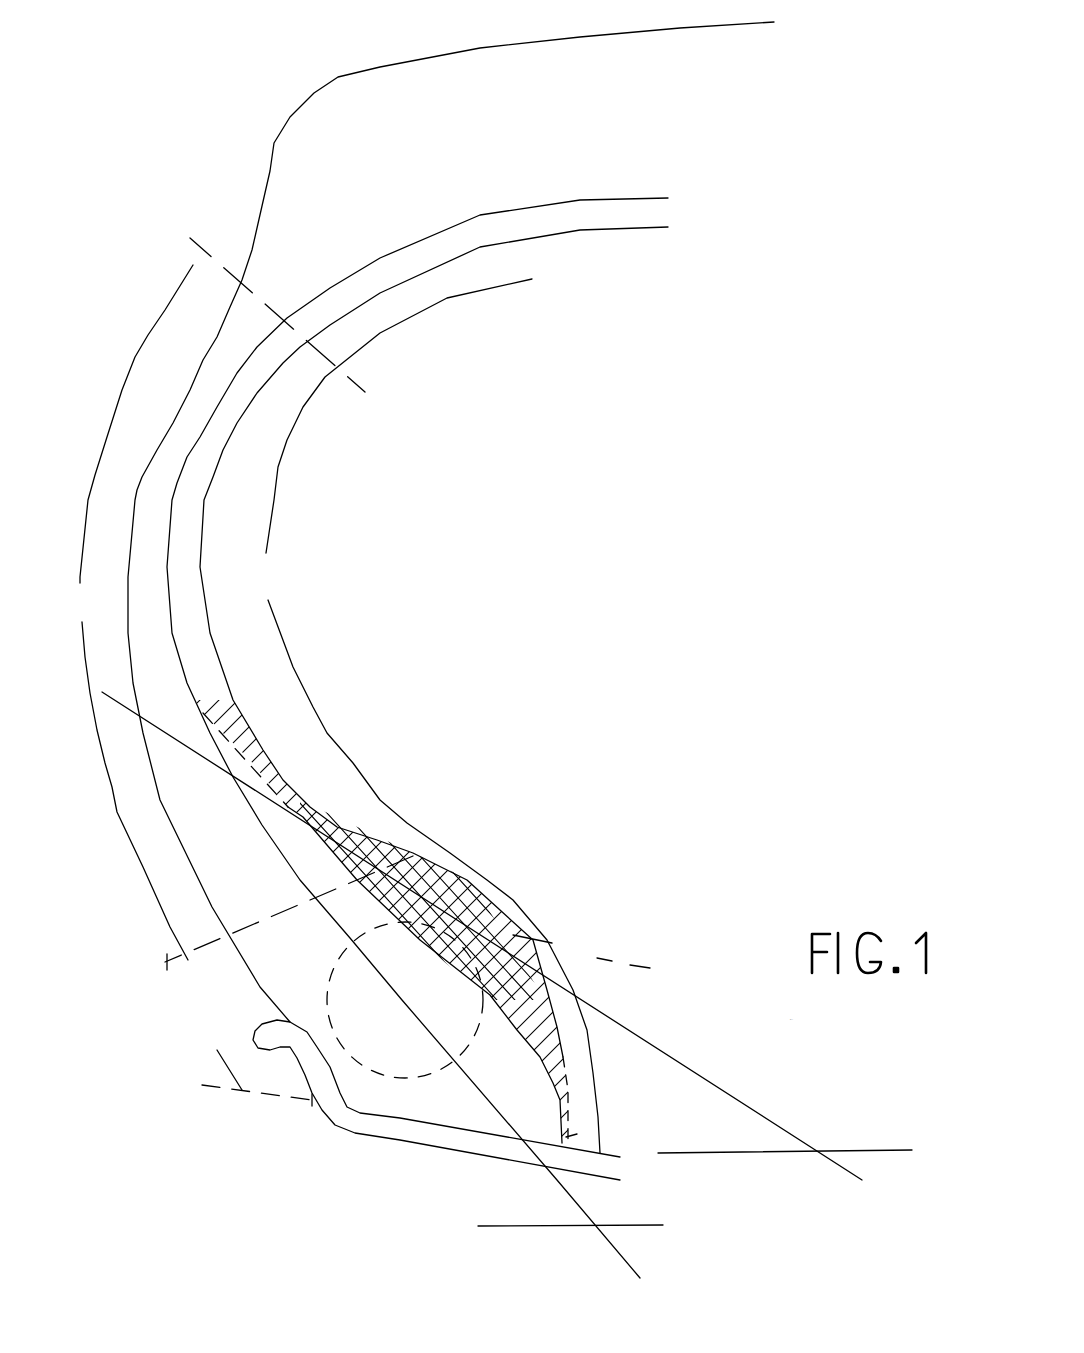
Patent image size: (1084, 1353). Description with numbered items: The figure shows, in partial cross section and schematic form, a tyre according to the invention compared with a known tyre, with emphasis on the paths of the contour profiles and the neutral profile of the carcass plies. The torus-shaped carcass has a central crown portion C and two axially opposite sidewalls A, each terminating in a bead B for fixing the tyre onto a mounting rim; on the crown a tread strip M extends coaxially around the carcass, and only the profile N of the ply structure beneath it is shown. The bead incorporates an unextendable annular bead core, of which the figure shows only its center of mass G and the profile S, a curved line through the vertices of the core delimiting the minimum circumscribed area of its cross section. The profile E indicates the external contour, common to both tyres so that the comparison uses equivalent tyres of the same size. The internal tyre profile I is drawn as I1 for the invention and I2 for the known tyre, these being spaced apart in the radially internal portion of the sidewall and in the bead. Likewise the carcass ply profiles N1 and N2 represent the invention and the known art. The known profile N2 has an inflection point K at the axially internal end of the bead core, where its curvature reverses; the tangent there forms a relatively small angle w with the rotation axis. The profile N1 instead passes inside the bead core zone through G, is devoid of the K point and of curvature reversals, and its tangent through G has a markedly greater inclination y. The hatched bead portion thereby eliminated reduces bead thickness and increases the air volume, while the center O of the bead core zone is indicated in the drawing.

The tread strip M is at (451, 601).
The sidewall A is at (333, 709).
The central crown portion C is at (417, 738).
The internal tyre profile I is at (212, 465).
The profile of the carcass ply structure N is at (172, 533).
The internal tyre profile of the known tyre I2 is at (333, 813).
The internal tyre profile of the tyre according to the invention I1 is at (413, 840).
The carcass ply profile of the known tyre N2 is at (413, 856).
The carcass ply profile of the tyre according to the invention N1 is at (290, 867).
The inflection point K is at (427, 870).
The external contour of the tyre E is at (143, 747).
The bead B is at (167, 963).
The bead core center O is at (405, 1000).
The profile of the bead core zone S is at (468, 1033).
The center of mass of the bead core G is at (408, 1035).
The angle of inclination at point K w is at (760, 1085).
The inclination of profile N1 y is at (587, 1182).